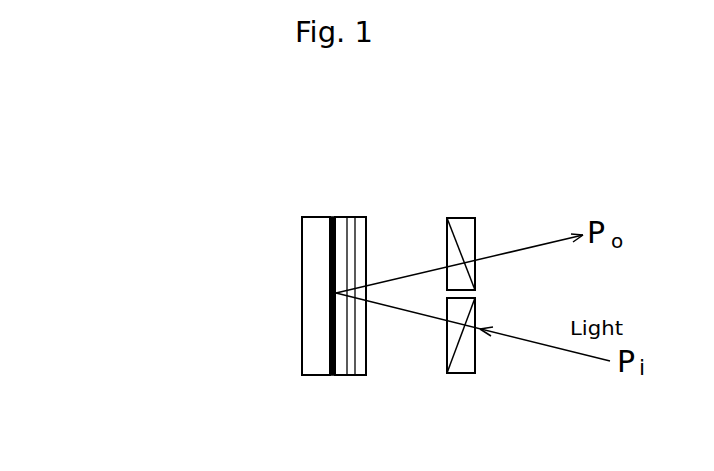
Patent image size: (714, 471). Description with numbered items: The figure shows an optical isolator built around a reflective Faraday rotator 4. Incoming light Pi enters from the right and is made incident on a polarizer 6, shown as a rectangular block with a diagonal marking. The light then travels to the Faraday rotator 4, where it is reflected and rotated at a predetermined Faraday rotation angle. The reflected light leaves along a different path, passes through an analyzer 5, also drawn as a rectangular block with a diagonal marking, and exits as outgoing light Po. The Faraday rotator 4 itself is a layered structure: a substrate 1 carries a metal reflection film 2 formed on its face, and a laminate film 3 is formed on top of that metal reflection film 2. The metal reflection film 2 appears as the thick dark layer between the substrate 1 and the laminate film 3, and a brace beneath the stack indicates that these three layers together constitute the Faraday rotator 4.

The substrate 1 is at (310, 265).
The metal reflection film 2 is at (334, 219).
The laminate film 3 is at (338, 217).
The Faraday rotator 4 is at (288, 390).
The analyzer 5 is at (472, 240).
The polarizer 6 is at (472, 352).